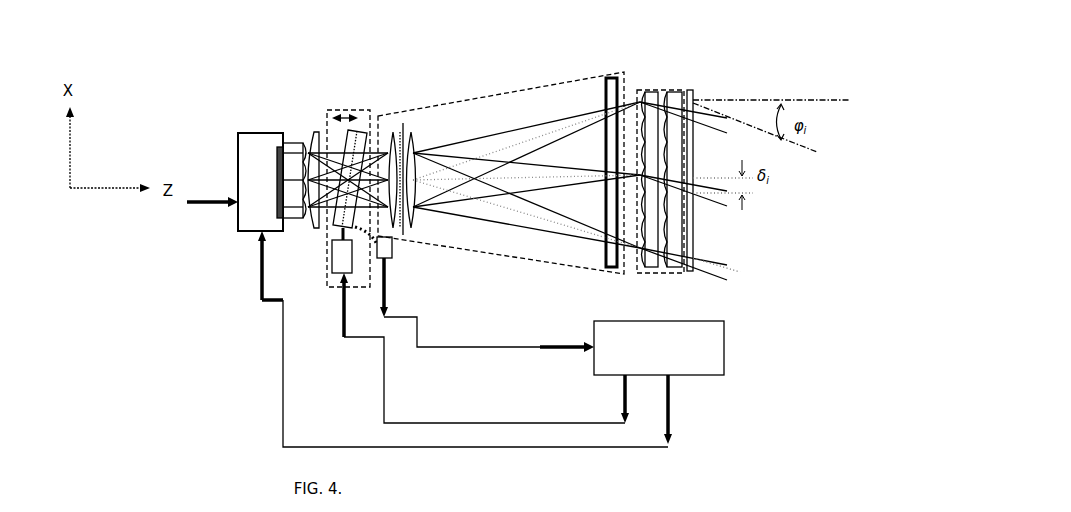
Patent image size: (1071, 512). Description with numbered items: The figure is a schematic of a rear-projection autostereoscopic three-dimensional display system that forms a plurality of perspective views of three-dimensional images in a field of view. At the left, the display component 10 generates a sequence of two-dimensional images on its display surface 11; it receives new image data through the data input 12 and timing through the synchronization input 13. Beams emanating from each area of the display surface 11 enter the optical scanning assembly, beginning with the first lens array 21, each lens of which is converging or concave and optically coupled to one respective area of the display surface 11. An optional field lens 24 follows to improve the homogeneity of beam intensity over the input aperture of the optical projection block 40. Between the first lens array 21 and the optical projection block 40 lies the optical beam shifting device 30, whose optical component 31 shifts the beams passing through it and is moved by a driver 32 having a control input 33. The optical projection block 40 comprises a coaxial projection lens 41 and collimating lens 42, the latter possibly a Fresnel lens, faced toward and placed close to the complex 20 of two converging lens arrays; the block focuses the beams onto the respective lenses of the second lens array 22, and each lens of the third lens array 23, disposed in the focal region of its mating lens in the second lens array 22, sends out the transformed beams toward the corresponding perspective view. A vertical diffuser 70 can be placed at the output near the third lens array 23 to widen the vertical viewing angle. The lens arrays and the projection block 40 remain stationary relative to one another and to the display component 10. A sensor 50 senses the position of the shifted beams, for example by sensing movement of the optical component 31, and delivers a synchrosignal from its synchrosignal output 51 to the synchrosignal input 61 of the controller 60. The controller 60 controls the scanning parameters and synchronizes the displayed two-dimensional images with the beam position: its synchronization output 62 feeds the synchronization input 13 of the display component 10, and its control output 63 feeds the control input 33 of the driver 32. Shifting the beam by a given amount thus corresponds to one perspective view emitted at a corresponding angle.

The display component 10 is at (237, 163).
The display surface 11 is at (278, 160).
The data input 12 is at (207, 207).
The synchronization input 13 is at (257, 248).
The complex of two converging lens arrays 20 is at (669, 146).
The first lens array 21 is at (297, 142).
The second lens array 22 is at (650, 92).
The third lens array 23 is at (677, 90).
The field lens 24 is at (313, 128).
The optical beam shifting device 30 is at (348, 152).
The optical component 31 is at (367, 128).
The driver 32 is at (330, 250).
The control input 33 is at (342, 310).
The optical projection block 40 is at (501, 149).
The projection lens 41 is at (425, 130).
The collimating lens 42 is at (603, 80).
The sensor 50 is at (395, 252).
The synchrosignal output 51 is at (388, 282).
The controller 60 is at (659, 348).
The synchrosignal input 61 is at (544, 350).
The synchronization output 62 is at (671, 410).
The control output 63 is at (617, 397).
The vertical diffuser 70 is at (693, 98).